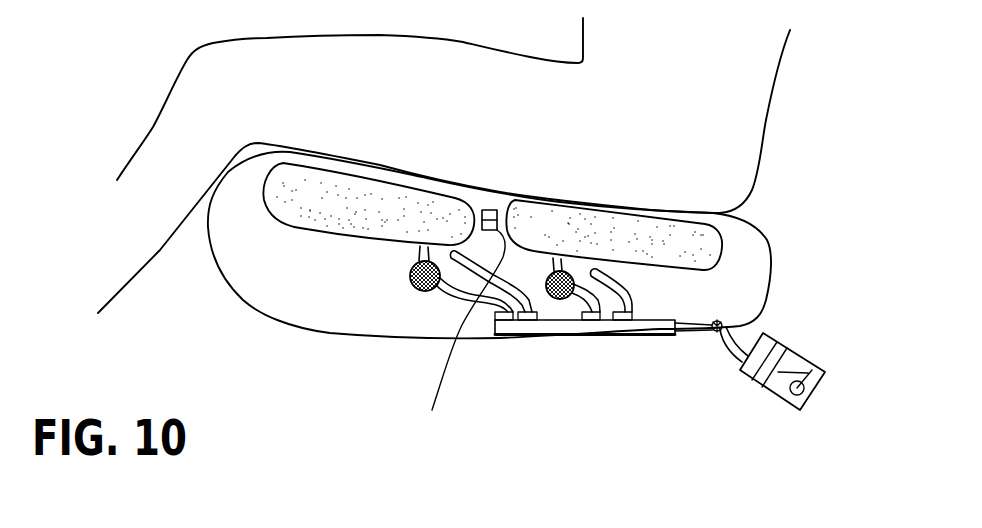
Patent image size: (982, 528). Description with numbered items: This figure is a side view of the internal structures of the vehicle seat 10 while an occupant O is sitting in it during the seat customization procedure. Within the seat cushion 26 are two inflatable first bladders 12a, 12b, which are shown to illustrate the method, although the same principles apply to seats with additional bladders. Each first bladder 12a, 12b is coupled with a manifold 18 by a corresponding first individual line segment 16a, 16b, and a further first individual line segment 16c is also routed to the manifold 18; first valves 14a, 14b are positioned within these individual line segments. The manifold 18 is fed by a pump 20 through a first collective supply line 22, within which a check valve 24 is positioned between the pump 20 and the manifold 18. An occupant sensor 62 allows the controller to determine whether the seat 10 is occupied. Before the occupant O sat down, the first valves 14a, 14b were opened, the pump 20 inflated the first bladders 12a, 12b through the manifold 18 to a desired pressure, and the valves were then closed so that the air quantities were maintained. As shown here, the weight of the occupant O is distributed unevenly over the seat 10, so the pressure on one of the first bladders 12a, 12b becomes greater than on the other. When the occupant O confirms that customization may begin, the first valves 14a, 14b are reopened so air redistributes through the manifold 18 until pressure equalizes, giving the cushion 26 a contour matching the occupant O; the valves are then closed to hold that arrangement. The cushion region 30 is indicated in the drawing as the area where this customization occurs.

The seat 10 is at (113, 140).
The occupant O is at (753, 98).
The seat cushion 26 is at (218, 301).
The cushion assembly 30 is at (532, 238).
The first bladder 12a is at (300, 240).
The first bladder 12b is at (722, 252).
The occupant sensor 62 is at (487, 208).
The first valve 14a is at (410, 275).
The first valve 14b is at (568, 272).
The first individual line segment 16a is at (437, 297).
The first individual line segment 16b is at (588, 292).
The first individual line segment 16c is at (454, 334).
The manifold 18 is at (593, 336).
The check valve 24 is at (720, 322).
The first collective supply line 22 is at (728, 353).
The pump 20 is at (773, 388).